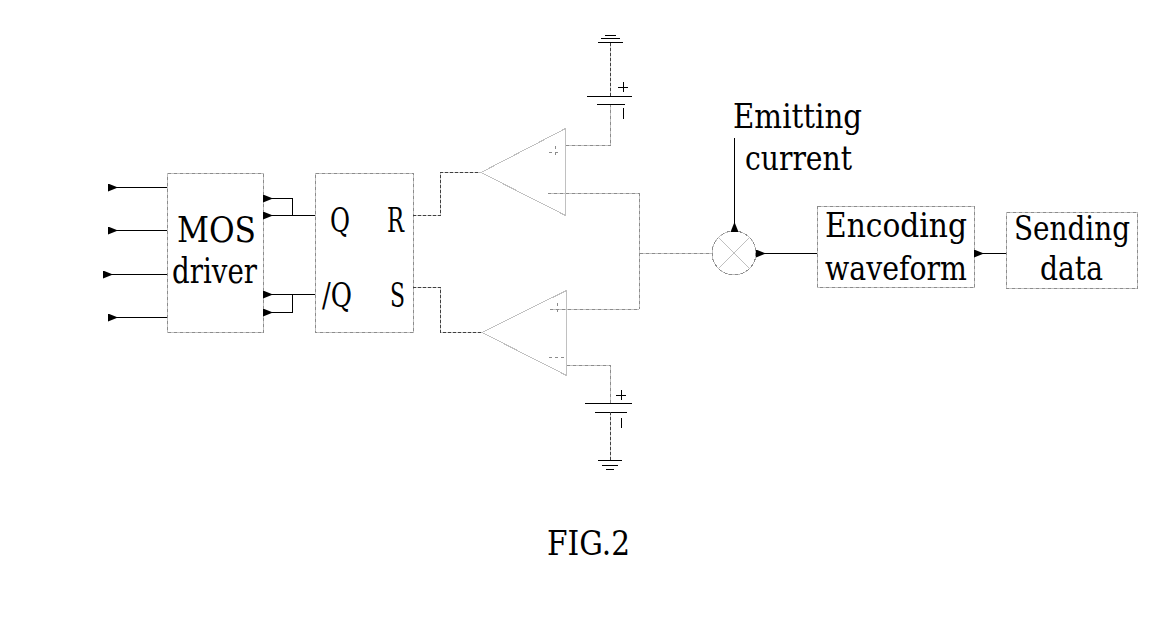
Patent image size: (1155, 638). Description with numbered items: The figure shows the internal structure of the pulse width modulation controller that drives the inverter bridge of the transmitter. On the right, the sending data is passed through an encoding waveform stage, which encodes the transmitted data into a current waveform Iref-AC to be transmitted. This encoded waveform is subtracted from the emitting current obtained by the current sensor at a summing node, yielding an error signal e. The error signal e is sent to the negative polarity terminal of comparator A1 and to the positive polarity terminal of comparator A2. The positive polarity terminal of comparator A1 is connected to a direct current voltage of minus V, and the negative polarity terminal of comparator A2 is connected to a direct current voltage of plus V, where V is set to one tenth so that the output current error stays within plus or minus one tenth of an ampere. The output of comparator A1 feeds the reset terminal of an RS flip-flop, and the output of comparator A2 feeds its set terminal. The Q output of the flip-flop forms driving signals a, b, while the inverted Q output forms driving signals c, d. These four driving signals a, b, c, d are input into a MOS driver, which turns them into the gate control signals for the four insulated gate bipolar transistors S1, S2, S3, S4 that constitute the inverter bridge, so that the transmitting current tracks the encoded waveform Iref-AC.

The insulated gate bipolar transistor S1 is at (138, 168).
The insulated gate bipolar transistor S2 is at (138, 215).
The insulated gate bipolar transistor S3 is at (135, 258).
The insulated gate bipolar transistor S4 is at (138, 303).
The driving signal a is at (279, 188).
The driving signal b is at (289, 226).
The driving signal c is at (289, 276).
The driving signal d is at (279, 319).
The comparator A1 is at (526, 160).
The comparator A2 is at (526, 346).
The direct current voltage V is at (600, 253).
The error signal e is at (676, 251).
The current waveform Iref-AC is at (771, 271).